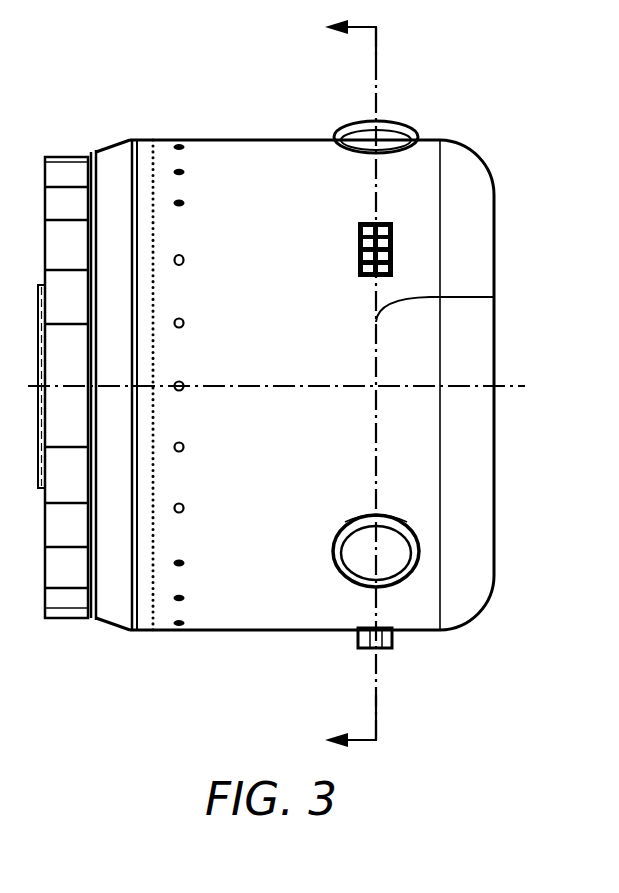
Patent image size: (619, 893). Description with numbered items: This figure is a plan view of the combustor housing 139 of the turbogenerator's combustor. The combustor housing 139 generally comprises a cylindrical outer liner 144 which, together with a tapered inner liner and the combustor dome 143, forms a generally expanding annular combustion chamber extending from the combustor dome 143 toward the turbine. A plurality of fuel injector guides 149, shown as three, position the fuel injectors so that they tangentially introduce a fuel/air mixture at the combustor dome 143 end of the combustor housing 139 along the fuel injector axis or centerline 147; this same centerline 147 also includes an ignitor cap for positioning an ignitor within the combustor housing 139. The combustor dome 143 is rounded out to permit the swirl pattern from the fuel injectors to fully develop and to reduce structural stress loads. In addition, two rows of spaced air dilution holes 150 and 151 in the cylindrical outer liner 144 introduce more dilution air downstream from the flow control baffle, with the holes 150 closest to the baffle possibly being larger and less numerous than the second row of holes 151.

The combustor housing 139 is at (452, 108).
The combustor dome 143 is at (494, 197).
The cylindrical outer liner 144 is at (200, 139).
The fuel injector axis or centerline 147 is at (494, 297).
The fuel injector guide 149 is at (419, 541).
The air dilution holes 150 is at (179, 391).
The air dilution holes 151 is at (165, 283).